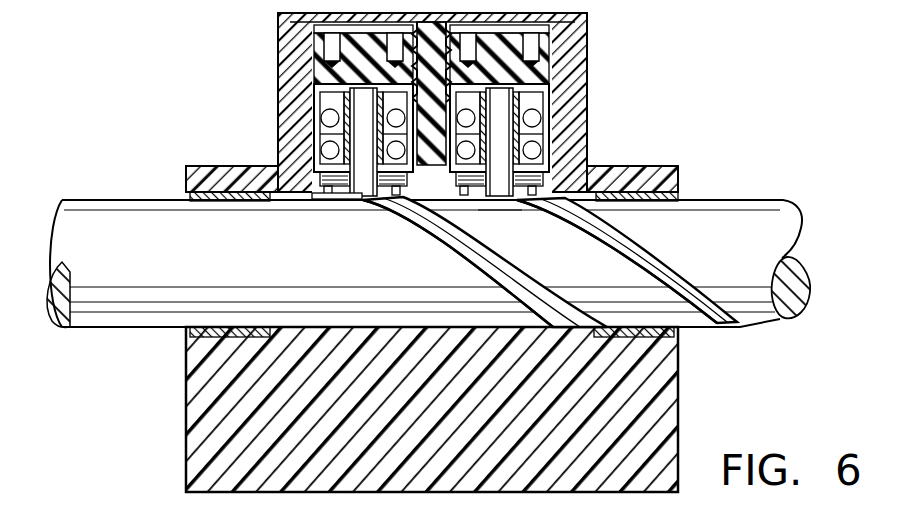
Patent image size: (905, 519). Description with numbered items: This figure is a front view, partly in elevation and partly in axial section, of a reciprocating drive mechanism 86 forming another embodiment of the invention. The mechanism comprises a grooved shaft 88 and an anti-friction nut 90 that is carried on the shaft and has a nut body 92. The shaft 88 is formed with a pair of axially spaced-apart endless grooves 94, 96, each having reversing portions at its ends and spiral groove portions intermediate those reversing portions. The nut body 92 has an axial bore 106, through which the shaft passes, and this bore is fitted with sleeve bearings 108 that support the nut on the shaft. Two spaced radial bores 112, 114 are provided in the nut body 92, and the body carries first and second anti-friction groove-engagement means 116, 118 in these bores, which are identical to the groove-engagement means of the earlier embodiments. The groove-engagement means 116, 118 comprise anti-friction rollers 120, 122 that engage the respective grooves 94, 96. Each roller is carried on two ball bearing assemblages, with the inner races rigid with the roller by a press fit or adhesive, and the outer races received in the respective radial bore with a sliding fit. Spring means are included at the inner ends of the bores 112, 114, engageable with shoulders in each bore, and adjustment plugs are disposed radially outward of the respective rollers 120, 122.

The reciprocating drive mechanism 86 is at (630, 83).
The grooved shaft 88 is at (93, 317).
The anti-friction nut 90 is at (253, 110).
The nut body 92 is at (577, 52).
The endless groove 94 is at (480, 255).
The endless groove 96 is at (637, 260).
The axial bore 106 is at (307, 320).
The sleeve bearings 108 is at (187, 197).
The radial bore 112 is at (307, 153).
The radial bore 114 is at (560, 147).
The first anti-friction groove-engagement means 116 is at (330, 208).
The second anti-friction groove-engagement means 118 is at (493, 217).
The anti-friction roller 120 is at (355, 190).
The anti-friction roller 122 is at (502, 190).